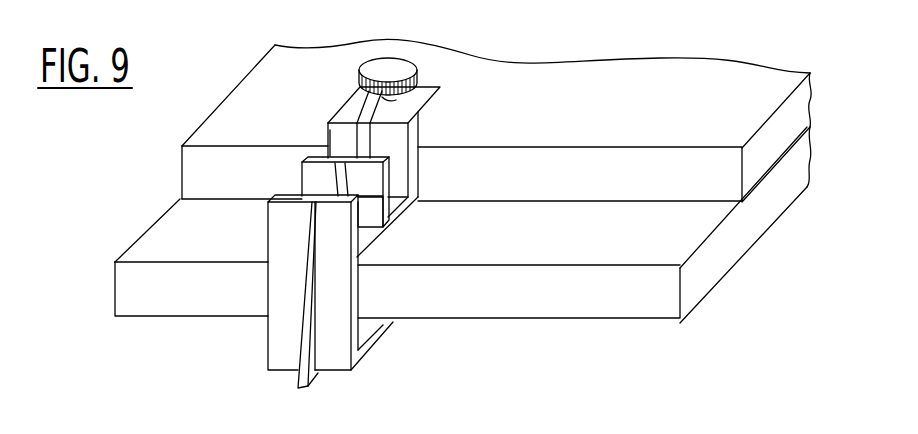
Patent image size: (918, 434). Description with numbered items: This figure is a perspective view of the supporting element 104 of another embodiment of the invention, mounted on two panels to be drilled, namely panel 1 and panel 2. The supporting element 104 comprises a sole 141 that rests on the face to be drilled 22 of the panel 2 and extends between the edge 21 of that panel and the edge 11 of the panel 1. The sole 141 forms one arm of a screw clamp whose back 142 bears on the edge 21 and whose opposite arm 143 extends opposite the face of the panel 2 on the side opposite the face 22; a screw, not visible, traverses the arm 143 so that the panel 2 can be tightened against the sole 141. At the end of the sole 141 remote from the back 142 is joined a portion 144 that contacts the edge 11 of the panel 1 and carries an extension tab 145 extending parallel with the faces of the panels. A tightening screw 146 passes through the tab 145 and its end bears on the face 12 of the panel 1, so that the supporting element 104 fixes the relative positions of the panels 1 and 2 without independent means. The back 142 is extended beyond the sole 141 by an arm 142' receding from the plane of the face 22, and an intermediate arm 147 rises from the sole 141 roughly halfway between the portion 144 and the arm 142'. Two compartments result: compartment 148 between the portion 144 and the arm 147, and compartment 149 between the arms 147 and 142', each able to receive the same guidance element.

The panel 1 is at (252, 75).
The panel 2 is at (151, 238).
The edge of panel 11 is at (563, 185).
The face of panel 12 is at (621, 119).
The edge of panel 21 is at (525, 307).
The face to be drilled 22 is at (598, 252).
The supporting element 104 is at (352, 372).
The sole 141 is at (373, 250).
The back 142 is at (260, 286).
The arm 142' is at (261, 295).
The arm 143 is at (377, 328).
The portion 144 is at (402, 158).
The extension tab 145 is at (425, 94).
The tightening screw 146 is at (390, 62).
The intermediate arm 147 is at (302, 169).
The compartment 148 is at (337, 143).
The compartment 149 is at (366, 209).